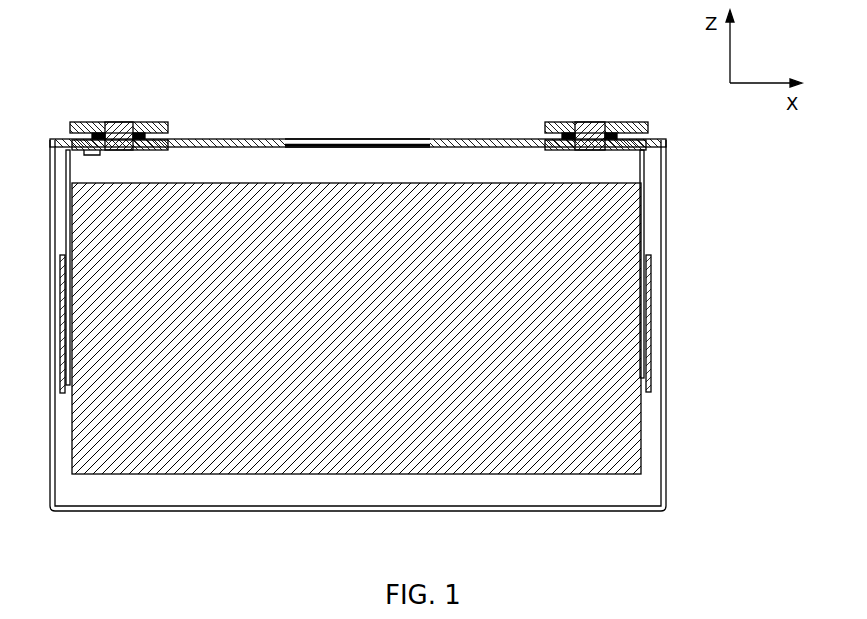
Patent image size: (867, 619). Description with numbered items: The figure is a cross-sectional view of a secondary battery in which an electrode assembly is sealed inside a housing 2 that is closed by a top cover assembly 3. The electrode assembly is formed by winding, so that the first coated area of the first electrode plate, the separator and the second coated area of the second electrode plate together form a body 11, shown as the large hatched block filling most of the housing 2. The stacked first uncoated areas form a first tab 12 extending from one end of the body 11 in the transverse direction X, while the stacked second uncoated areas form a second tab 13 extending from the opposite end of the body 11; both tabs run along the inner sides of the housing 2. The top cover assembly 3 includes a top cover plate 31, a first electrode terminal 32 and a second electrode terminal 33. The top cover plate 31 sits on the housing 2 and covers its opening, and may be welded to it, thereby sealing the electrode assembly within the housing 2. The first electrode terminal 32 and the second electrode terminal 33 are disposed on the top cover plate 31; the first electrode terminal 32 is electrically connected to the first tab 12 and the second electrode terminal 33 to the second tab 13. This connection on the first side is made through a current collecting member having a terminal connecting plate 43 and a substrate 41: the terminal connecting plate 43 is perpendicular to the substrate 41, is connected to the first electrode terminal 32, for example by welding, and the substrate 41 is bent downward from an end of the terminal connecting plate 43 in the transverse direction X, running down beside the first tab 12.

The housing 2 is at (667, 262).
The top cover assembly 3 is at (385, 78).
The body 11 is at (347, 476).
The first tab 12 is at (63, 393).
The second tab 13 is at (650, 392).
The top cover plate 31 is at (242, 138).
The first electrode terminal 32 is at (130, 122).
The second electrode terminal 33 is at (588, 122).
The substrate 41 is at (66, 206).
The terminal connecting plate 43 is at (93, 152).